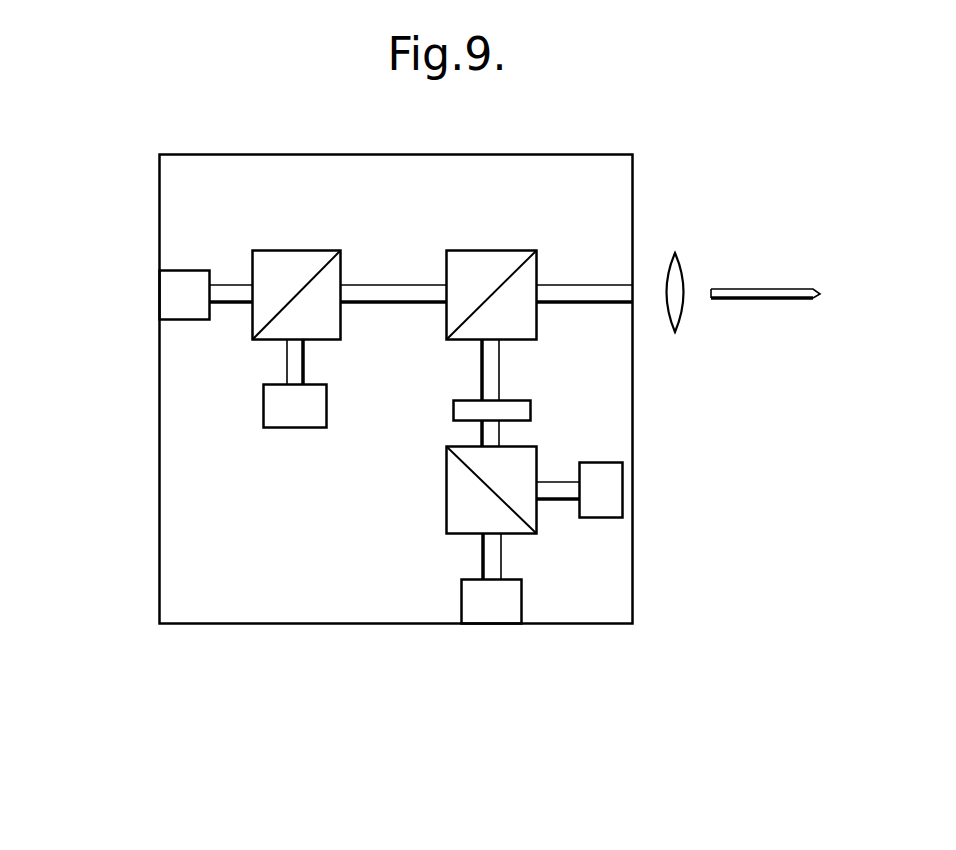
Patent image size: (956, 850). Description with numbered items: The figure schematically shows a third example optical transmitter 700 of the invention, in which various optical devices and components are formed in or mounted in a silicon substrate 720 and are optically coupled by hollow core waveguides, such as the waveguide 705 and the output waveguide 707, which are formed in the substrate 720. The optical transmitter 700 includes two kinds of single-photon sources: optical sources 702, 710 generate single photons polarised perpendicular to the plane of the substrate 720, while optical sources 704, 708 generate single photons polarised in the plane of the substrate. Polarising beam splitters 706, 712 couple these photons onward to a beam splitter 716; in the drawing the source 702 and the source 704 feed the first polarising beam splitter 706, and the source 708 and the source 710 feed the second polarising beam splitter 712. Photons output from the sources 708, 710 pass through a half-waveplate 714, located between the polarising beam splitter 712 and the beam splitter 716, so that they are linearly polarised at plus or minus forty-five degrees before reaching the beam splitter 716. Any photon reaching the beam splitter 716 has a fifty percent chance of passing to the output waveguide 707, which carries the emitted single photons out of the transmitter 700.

The optical transmitter 700 is at (186, 712).
The optical source 702 is at (175, 295).
The optical source 704 is at (300, 410).
The hollow core waveguide 705 is at (389, 290).
The polarising beam splitter 706 is at (283, 262).
The output waveguide 707 is at (583, 290).
The optical source 708 is at (608, 488).
The optical source 710 is at (493, 603).
The polarising beam splitter 712 is at (470, 498).
The half-waveplate 714 is at (468, 410).
The beam splitter 716 is at (481, 268).
The silicon substrate 720 is at (195, 593).